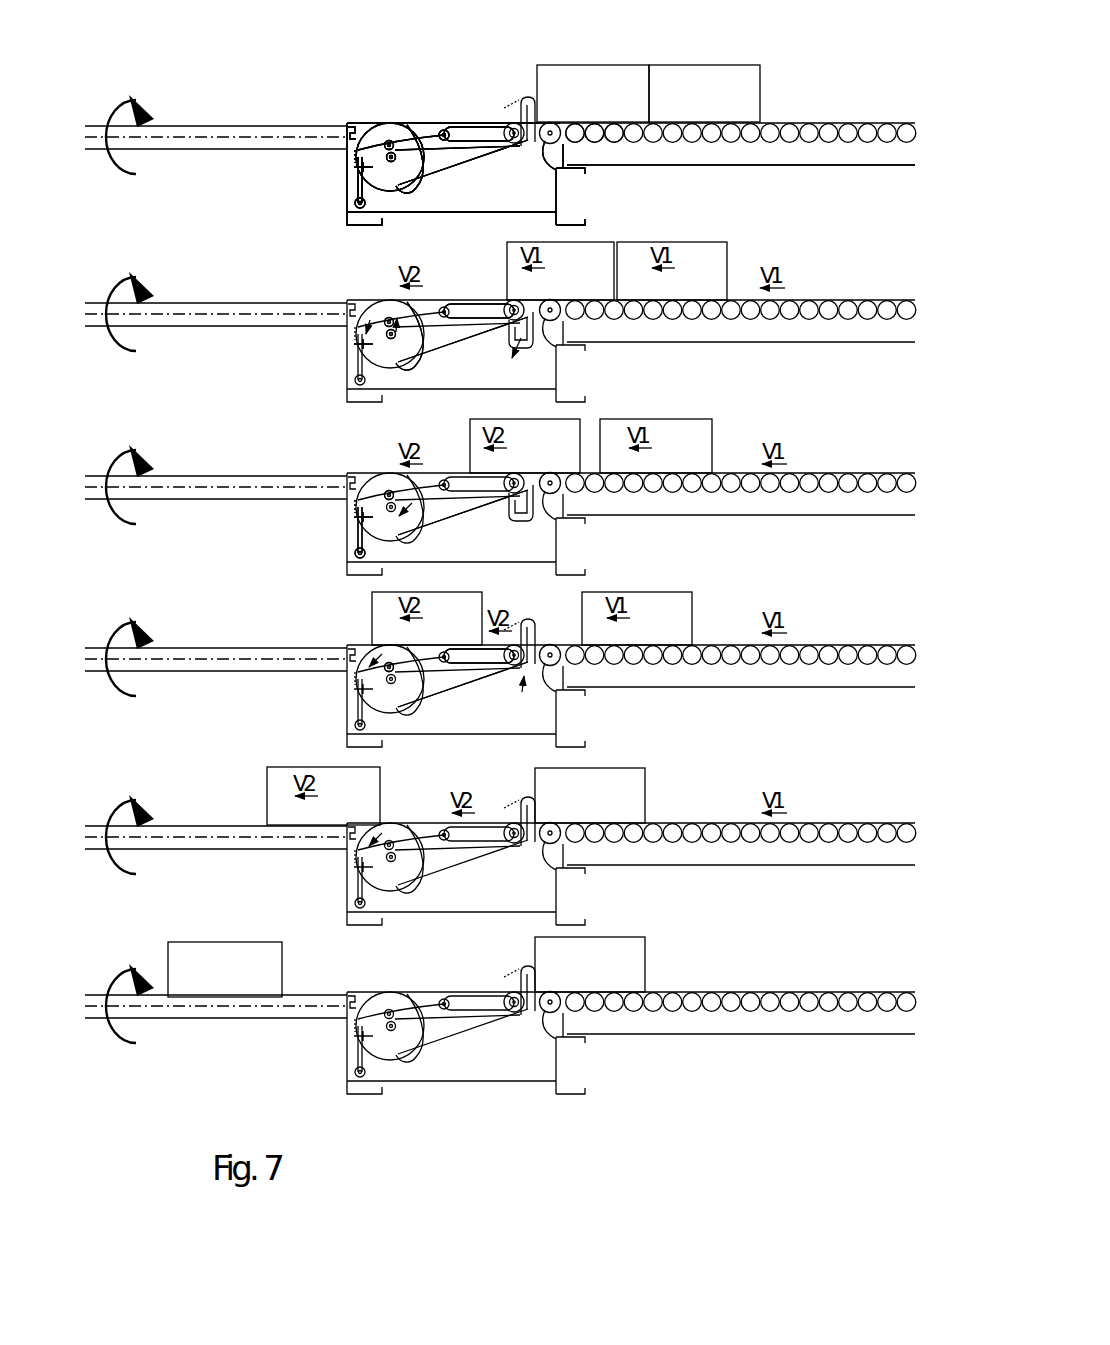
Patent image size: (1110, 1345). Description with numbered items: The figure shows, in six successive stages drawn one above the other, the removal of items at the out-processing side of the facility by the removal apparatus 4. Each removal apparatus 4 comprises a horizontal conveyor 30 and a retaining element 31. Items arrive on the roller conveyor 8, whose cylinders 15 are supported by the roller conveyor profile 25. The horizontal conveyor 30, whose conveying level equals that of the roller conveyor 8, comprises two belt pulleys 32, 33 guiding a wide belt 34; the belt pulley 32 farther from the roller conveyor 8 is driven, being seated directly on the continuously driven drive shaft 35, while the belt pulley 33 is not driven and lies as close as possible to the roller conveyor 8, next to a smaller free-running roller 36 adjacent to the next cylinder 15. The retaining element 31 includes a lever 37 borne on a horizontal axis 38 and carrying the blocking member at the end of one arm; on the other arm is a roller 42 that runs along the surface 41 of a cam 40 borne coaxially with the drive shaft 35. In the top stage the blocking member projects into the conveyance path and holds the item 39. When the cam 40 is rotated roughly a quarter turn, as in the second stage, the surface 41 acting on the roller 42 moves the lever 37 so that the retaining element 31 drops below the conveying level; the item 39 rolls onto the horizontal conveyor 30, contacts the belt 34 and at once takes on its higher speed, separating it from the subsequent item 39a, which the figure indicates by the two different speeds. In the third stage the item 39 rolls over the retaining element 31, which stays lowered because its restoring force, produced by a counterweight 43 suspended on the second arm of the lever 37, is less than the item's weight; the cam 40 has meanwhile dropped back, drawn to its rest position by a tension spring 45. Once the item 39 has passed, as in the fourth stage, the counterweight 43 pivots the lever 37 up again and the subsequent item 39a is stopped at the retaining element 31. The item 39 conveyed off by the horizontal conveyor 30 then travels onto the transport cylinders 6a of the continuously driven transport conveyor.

The removal apparatus 4 is at (450, 178).
The transport cylinders 6a is at (242, 131).
The roller conveyor 8 is at (821, 121).
The cylinders 15 is at (613, 138).
The roller conveyor profile 25 is at (762, 157).
The horizontal conveyor 30 is at (466, 174).
The retaining element 31 is at (524, 94).
The belt pulley 32 is at (385, 124).
The belt pulley 33 is at (517, 124).
The belt 34 is at (420, 153).
The drive shaft 35 is at (386, 193).
The free-running roller 36 is at (546, 147).
The lever 37 is at (490, 144).
The horizontal axis 38 is at (448, 141).
The item 39 is at (597, 77).
The subsequent item 39a is at (709, 77).
The cam 40 is at (403, 186).
The surface 41 is at (427, 158).
The roller 42 is at (386, 143).
The counterweight 43 is at (354, 200).
The tension spring 45 is at (356, 362).